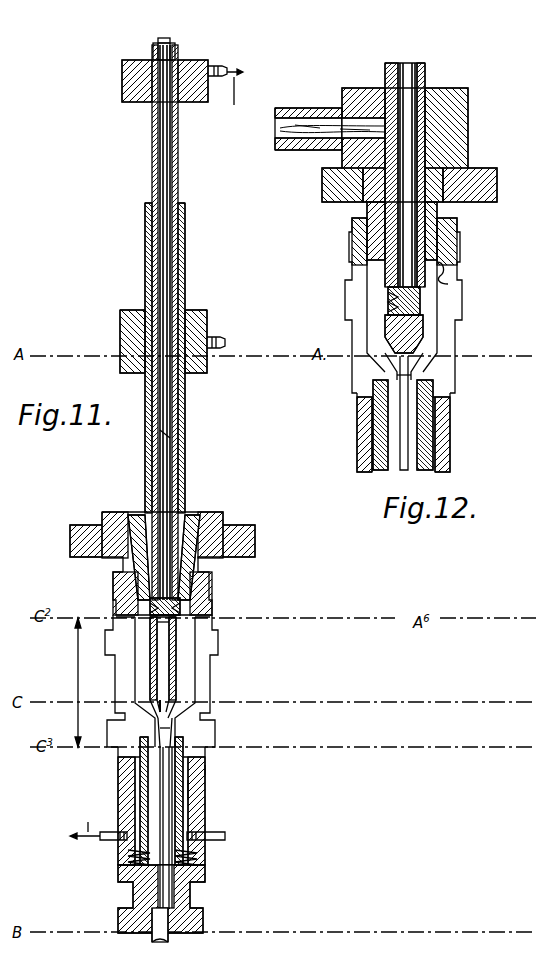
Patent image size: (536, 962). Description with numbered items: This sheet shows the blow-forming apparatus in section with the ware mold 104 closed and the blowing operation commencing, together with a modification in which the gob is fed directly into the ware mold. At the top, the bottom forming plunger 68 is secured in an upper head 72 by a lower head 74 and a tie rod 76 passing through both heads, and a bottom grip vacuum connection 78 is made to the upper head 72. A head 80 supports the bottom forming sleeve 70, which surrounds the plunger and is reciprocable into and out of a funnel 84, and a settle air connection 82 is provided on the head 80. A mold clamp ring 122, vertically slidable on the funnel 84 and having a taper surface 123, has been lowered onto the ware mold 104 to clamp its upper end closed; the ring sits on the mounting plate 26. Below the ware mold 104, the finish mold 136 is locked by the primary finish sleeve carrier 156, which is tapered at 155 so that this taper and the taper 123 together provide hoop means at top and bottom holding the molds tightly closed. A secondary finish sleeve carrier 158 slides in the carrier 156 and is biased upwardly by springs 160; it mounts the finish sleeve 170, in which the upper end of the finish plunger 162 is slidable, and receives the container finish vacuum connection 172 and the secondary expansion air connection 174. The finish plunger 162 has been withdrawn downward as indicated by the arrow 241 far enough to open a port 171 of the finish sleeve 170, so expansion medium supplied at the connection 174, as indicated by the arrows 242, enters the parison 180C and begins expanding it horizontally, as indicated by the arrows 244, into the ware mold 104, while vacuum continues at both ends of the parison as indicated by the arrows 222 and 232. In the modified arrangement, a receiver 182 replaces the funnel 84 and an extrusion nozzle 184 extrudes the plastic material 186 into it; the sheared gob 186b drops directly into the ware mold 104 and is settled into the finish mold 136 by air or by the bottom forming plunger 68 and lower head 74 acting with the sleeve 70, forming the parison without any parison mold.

In FIG. 11, the mounting plate 26 is at (80, 525).
In FIG. 12, the mounting plate 26 is at (497, 172).
In FIG. 11, the bottom forming plunger 68 is at (152, 155).
In FIG. 12, the bottom forming plunger 68 is at (391, 63).
In FIG. 11, the bottom forming sleeve 70 is at (145, 237).
In FIG. 12, the bottom forming sleeve 70 is at (425, 74).
In FIG. 11, the upper head 72 is at (122, 63).
In FIG. 11, the lower head 74 is at (152, 612).
In FIG. 12, the lower head 74 is at (390, 310).
In FIG. 11, the tie rod 76 is at (164, 38).
In FIG. 12, the tie rod 76 is at (407, 63).
In FIG. 11, the bottom grip vacuum connection 78 is at (216, 66).
In FIG. 11, the head 80 is at (120, 327).
In FIG. 11, the settle air connection 82 is at (222, 338).
In FIG. 11, the funnel 84 is at (188, 516).
In FIG. 11, the ware mold 104 is at (200, 692).
In FIG. 12, the ware mold 104 is at (445, 348).
In FIG. 11, the mold clamp ring 122 is at (113, 580).
In FIG. 12, the mold clamp ring 122 is at (352, 224).
In FIG. 12, the taper surface 123 is at (457, 286).
In FIG. 11, the finish mold 136 is at (205, 752).
In FIG. 12, the finish mold 136 is at (445, 388).
In FIG. 11, the taper 155 is at (207, 770).
In FIG. 11, the primary finish sleeve carrier 156 is at (205, 873).
In FIG. 11, the secondary finish sleeve carrier 158 is at (205, 790).
In FIG. 11, the springs 160 is at (130, 858).
In FIG. 11, the finish plunger 162 is at (140, 800).
In FIG. 12, the finish plunger 162 is at (400, 444).
In FIG. 11, the finish sleeve 170 is at (170, 716).
In FIG. 12, the finish sleeve 170 is at (395, 370).
In FIG. 11, the port 171 is at (175, 728).
In FIG. 12, the port 171 is at (413, 374).
In FIG. 11, the container finish vacuum connection 172 is at (104, 840).
In FIG. 11, the secondary expansion air connection 174 is at (225, 840).
In FIG. 11, the parison 180C is at (172, 623).
In FIG. 12, the receiver 182 is at (468, 136).
In FIG. 12, the extrusion nozzle 184 is at (336, 108).
In FIG. 12, the plastic material 186 is at (296, 136).
In FIG. 12, the gob 186b is at (423, 330).
In FIG. 11, the arrows 222 is at (160, 812).
In FIG. 11, the arrows 232 is at (167, 440).
In FIG. 11, the arrow 241 is at (64, 682).
In FIG. 11, the arrows 242 is at (165, 705).
In FIG. 11, the arrows 244 is at (170, 650).